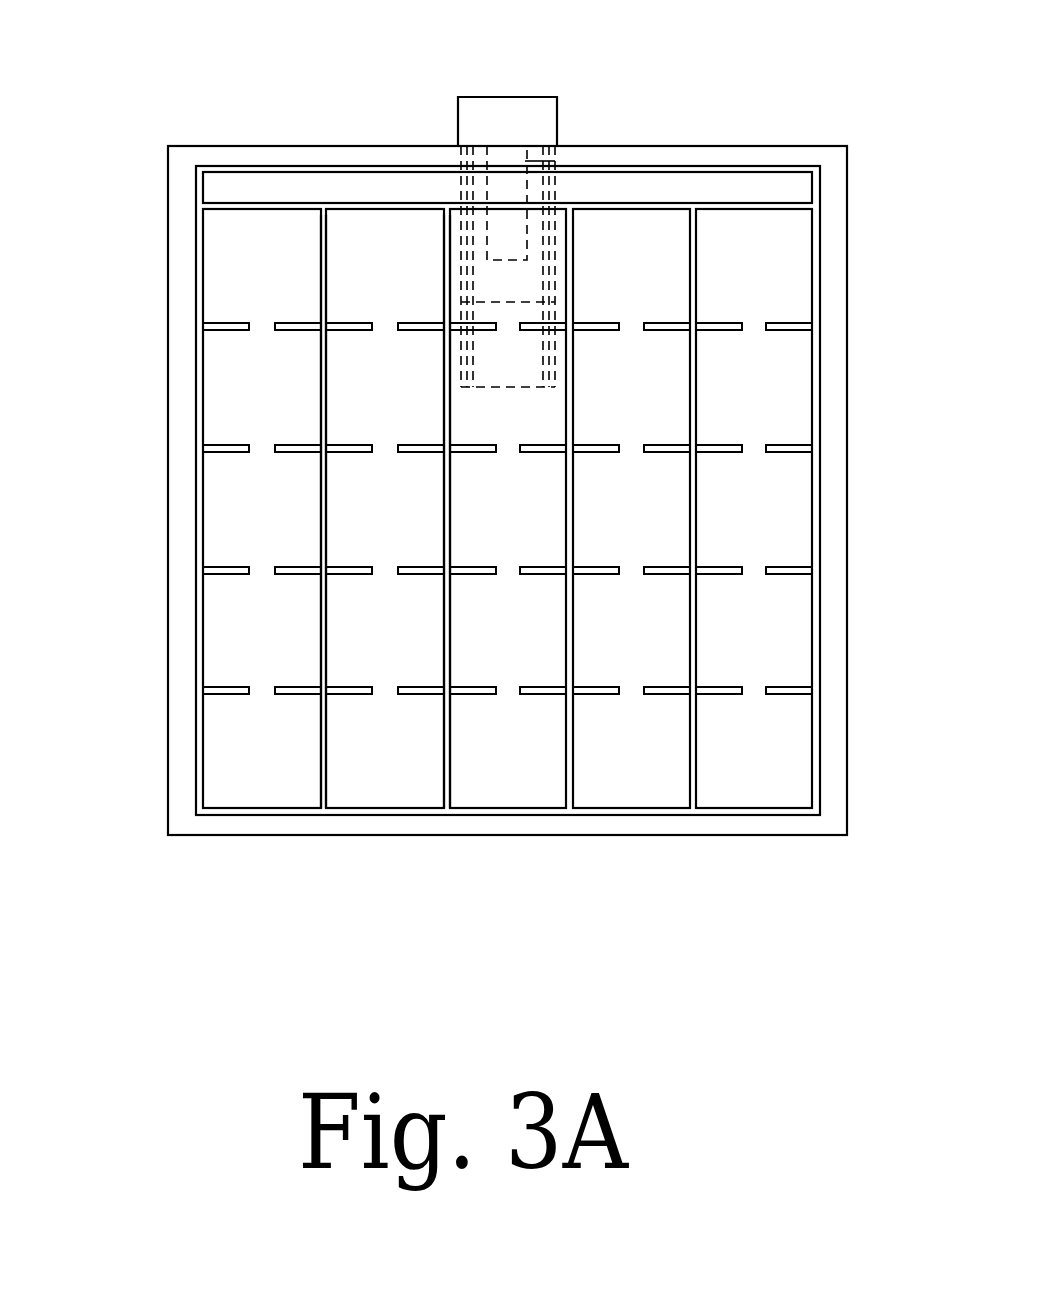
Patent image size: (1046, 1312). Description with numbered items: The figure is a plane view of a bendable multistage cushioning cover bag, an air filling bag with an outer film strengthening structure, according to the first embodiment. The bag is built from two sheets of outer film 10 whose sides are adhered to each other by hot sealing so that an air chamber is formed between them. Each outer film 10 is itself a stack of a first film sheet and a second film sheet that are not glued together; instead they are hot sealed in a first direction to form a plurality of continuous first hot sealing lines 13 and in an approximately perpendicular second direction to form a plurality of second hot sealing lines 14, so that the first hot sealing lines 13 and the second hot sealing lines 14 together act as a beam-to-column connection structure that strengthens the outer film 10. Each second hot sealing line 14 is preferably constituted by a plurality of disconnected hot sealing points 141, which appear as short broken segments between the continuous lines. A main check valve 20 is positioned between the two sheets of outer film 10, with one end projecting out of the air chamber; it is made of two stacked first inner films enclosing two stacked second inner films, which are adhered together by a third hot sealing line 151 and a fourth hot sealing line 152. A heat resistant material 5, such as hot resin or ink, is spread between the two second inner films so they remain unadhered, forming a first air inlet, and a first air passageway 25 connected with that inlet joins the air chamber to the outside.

The outer film 10 is at (860, 126).
The fourth hot sealing line 152 is at (268, 166).
The third hot sealing line 151 is at (224, 207).
The second hot sealing lines 14 is at (188, 563).
The disconnected hot sealing points 141 is at (298, 686).
The first hot sealing lines 13 is at (443, 793).
The main check valve 20 is at (572, 86).
The first air passageway 25 is at (508, 360).
The heat resistant material 5 is at (526, 156).